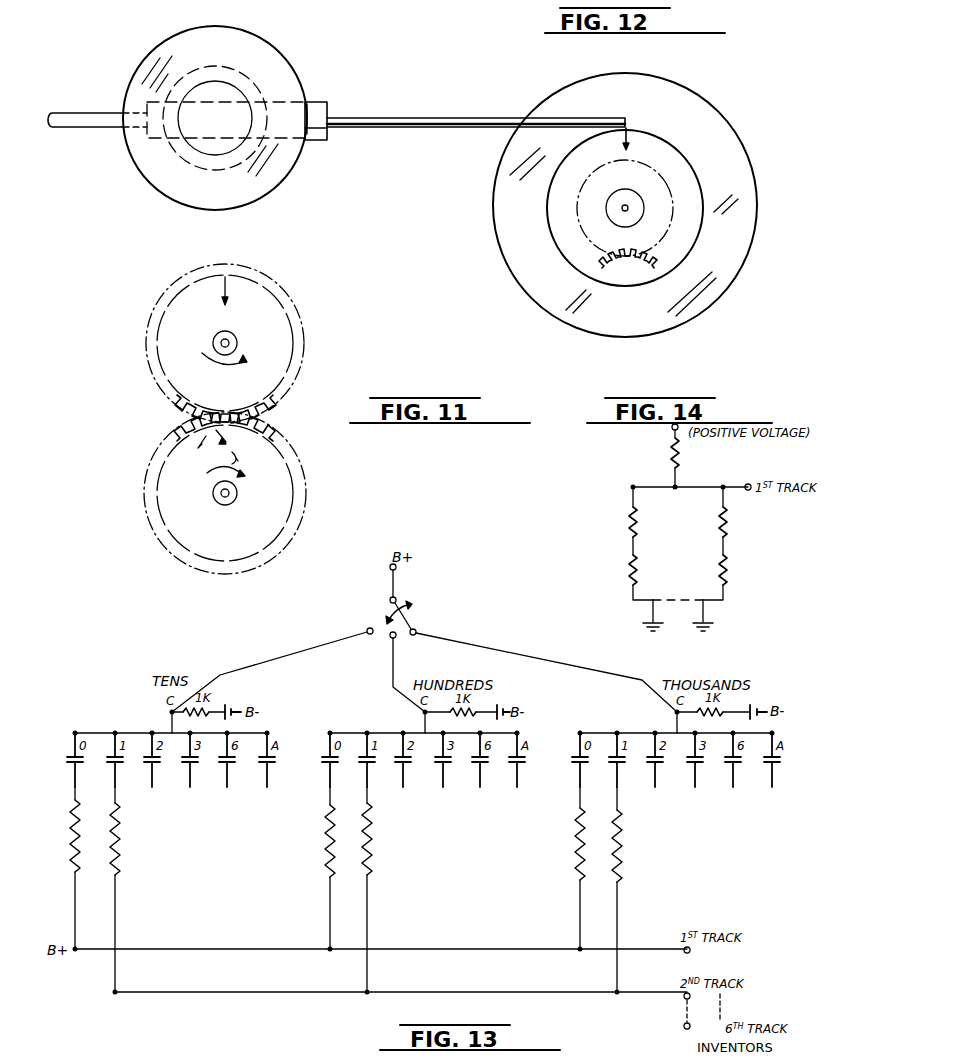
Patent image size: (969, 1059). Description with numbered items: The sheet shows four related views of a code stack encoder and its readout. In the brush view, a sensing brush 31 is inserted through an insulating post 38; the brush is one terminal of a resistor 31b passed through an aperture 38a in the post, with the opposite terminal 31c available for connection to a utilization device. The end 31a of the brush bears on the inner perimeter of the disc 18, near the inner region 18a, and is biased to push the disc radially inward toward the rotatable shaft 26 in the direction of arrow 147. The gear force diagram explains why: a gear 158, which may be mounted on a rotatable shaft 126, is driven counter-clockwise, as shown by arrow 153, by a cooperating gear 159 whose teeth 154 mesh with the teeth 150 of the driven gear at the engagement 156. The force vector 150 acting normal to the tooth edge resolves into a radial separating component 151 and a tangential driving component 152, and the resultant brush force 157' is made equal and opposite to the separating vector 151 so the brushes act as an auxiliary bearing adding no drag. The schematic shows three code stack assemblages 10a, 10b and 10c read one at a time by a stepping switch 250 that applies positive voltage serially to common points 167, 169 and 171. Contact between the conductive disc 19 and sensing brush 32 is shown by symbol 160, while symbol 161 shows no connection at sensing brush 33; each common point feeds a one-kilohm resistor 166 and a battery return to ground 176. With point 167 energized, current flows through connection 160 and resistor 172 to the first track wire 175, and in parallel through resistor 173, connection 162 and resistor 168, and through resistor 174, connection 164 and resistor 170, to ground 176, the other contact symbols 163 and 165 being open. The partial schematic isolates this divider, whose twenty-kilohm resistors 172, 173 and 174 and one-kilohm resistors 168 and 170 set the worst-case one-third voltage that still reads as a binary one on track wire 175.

In FIG. 12, the insulating post 38 is at (281, 54).
In FIG. 12, the aperture 38a is at (160, 140).
In FIG. 12, the sensing brush 31 is at (386, 117).
In FIG. 12, the end of sensing brush 31a is at (631, 131).
In FIG. 12, the resistor 31b is at (316, 102).
In FIG. 12, the opposite terminal of resistor 31c is at (92, 128).
In FIG. 12, the arrow 147 is at (630, 151).
In FIG. 12, the disc 18 is at (738, 178).
In FIG. 12, the inner disc portion 18a is at (682, 159).
In FIG. 12, the rotatable shaft 126 is at (640, 200).
In FIG. 12, the gear 158 is at (662, 228).
In FIG. 11, the gear 158 is at (305, 334).
In FIG. 12, the gear 159 is at (652, 260).
In FIG. 11, the gear 159 is at (297, 457).
In FIG. 11, the force 157' is at (205, 299).
In FIG. 11, the arrow 153 is at (241, 346).
In FIG. 11, the gear teeth 154 is at (178, 405).
In FIG. 11, the tooth engagement 156 is at (224, 419).
In FIG. 11, the force vector 150 is at (240, 437).
In FIG. 11, the radial (separation) component vector 151 is at (204, 449).
In FIG. 11, the tangential (driving) component vector 152 is at (253, 463).
In FIG. 11, the rotatable shaft 26 is at (221, 502).
In FIG. 14, the common point 167 is at (669, 427).
In FIG. 13, the common point 167 is at (170, 712).
In FIG. 14, the resistor 172 is at (670, 456).
In FIG. 13, the resistor 172 is at (75, 876).
In FIG. 14, the first track wire 175 is at (733, 484).
In FIG. 13, the first track wire 175 is at (453, 948).
In FIG. 14, the resistor 173 is at (630, 522).
In FIG. 13, the resistor 173 is at (325, 843).
In FIG. 14, the resistor 174 is at (764, 521).
In FIG. 13, the resistor 174 is at (575, 840).
In FIG. 14, the resistor 168 is at (632, 572).
In FIG. 13, the resistor 168 is at (455, 720).
In FIG. 14, the resistor 170 is at (751, 577).
In FIG. 13, the resistor 170 is at (702, 720).
In FIG. 14, the ground potential 176 is at (642, 631).
In FIG. 13, the ground potential 176 is at (238, 703).
In FIG. 13, the stepping switch 250 is at (405, 600).
In FIG. 13, the code stack assemblage 10a is at (118, 690).
In FIG. 13, the code stack assemblage 10b is at (380, 700).
In FIG. 13, the code stack assemblage 10c is at (636, 704).
In FIG. 13, the conductive disc 19 is at (73, 736).
In FIG. 13, the resistor 1K 166 is at (190, 720).
In FIG. 13, the symbol 160 is at (71, 763).
In FIG. 13, the symbol 161 is at (111, 763).
In FIG. 13, the sensing brush 32 is at (73, 792).
In FIG. 13, the sensing brush 33 is at (115, 792).
In FIG. 13, the closed connection 162 is at (322, 766).
In FIG. 13, the capacitor 163 is at (370, 770).
In FIG. 13, the common point 169 is at (425, 712).
In FIG. 13, the closed connection 164 is at (571, 760).
In FIG. 13, the capacitor 165 is at (620, 768).
In FIG. 13, the common point 171 is at (677, 712).